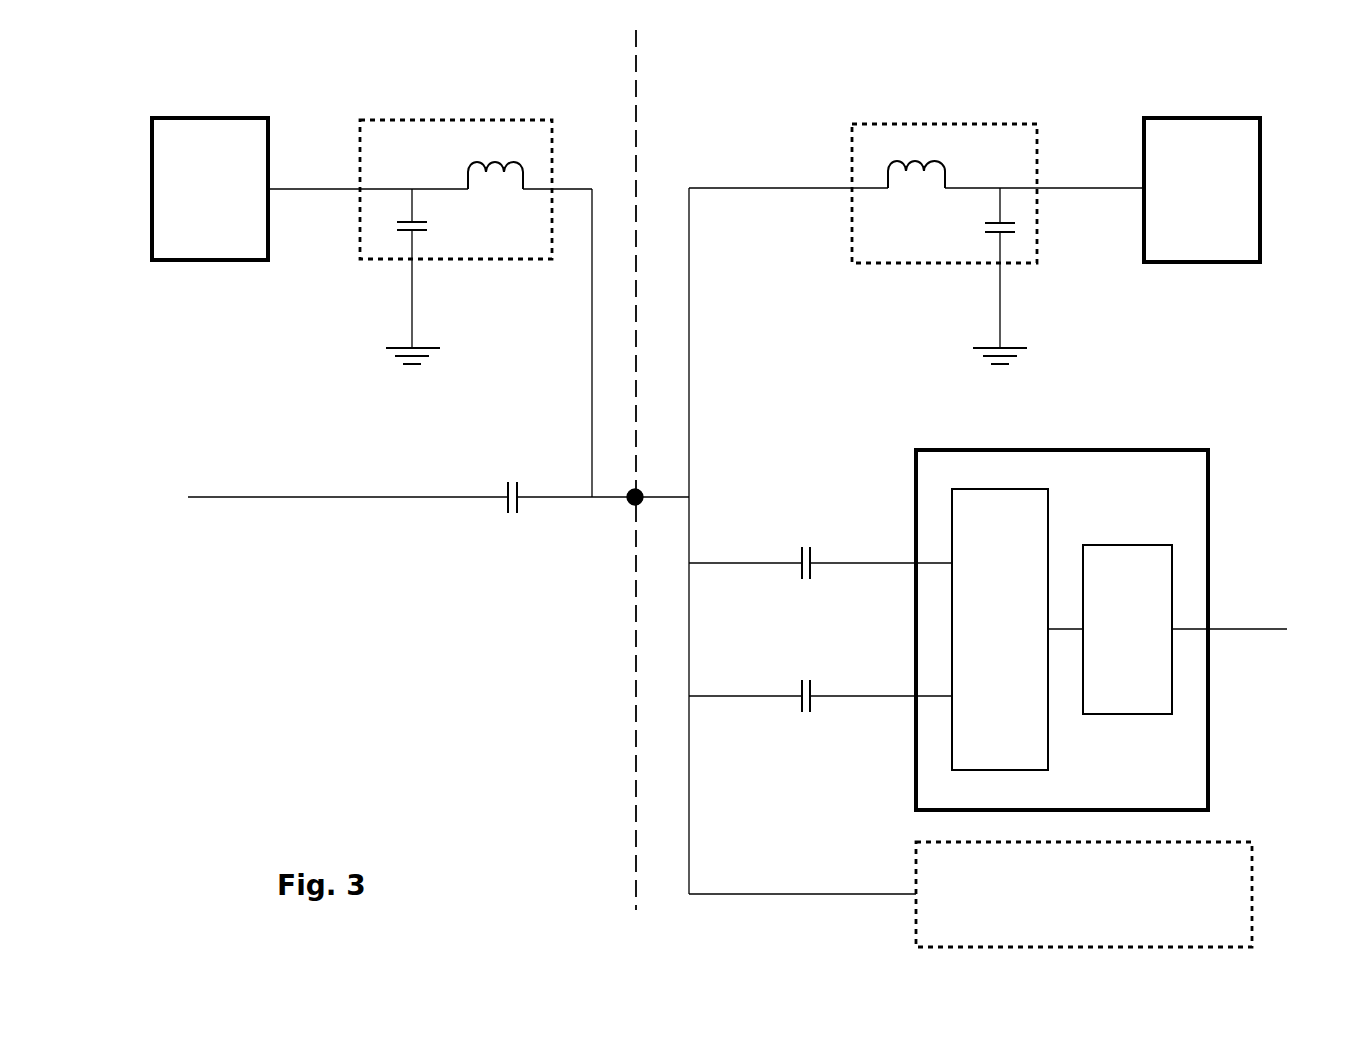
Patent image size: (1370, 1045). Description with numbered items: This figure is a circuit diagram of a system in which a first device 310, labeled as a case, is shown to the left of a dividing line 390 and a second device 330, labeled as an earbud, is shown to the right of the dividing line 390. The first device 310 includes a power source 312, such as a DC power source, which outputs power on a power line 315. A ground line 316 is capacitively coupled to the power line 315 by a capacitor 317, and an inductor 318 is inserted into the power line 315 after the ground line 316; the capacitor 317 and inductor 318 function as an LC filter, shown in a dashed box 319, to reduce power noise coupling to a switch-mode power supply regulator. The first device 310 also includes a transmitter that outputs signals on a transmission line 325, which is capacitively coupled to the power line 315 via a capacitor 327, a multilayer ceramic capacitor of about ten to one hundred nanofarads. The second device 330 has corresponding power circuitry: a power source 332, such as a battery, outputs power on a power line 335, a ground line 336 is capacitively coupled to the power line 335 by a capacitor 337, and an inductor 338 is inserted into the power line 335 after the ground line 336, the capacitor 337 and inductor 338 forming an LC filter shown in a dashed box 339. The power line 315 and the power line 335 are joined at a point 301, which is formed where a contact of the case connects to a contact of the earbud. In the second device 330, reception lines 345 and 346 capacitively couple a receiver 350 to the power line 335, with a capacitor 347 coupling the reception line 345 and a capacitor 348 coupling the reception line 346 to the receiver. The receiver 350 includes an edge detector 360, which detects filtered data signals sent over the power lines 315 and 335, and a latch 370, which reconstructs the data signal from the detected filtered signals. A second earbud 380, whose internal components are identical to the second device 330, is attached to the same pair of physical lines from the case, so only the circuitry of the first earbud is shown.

The first device 310 is at (293, 72).
The power source 312 is at (210, 189).
The power line 315 is at (592, 428).
The ground line 316 is at (411, 316).
The capacitor 317 is at (428, 222).
The inductor 318 is at (464, 176).
The dashed box 319 is at (436, 120).
The transmission line 325 is at (362, 497).
The capacitor 327 is at (505, 505).
The point 301 is at (645, 490).
The second device 330 is at (806, 72).
The power source 332 is at (1202, 190).
The power line 335 is at (689, 418).
The ground line 336 is at (1000, 318).
The capacitor 337 is at (985, 232).
The inductor 338 is at (945, 165).
The dashed box 339 is at (945, 125).
The reception line 345 is at (915, 563).
The reception line 346 is at (915, 697).
The capacitor 347 is at (801, 578).
The capacitor 348 is at (801, 681).
The receiver 350 is at (917, 450).
The edge detector 360 is at (1000, 629).
The latch 370 is at (1127, 629).
The second earbud 380 is at (970, 894).
The dividing line 390 is at (636, 893).